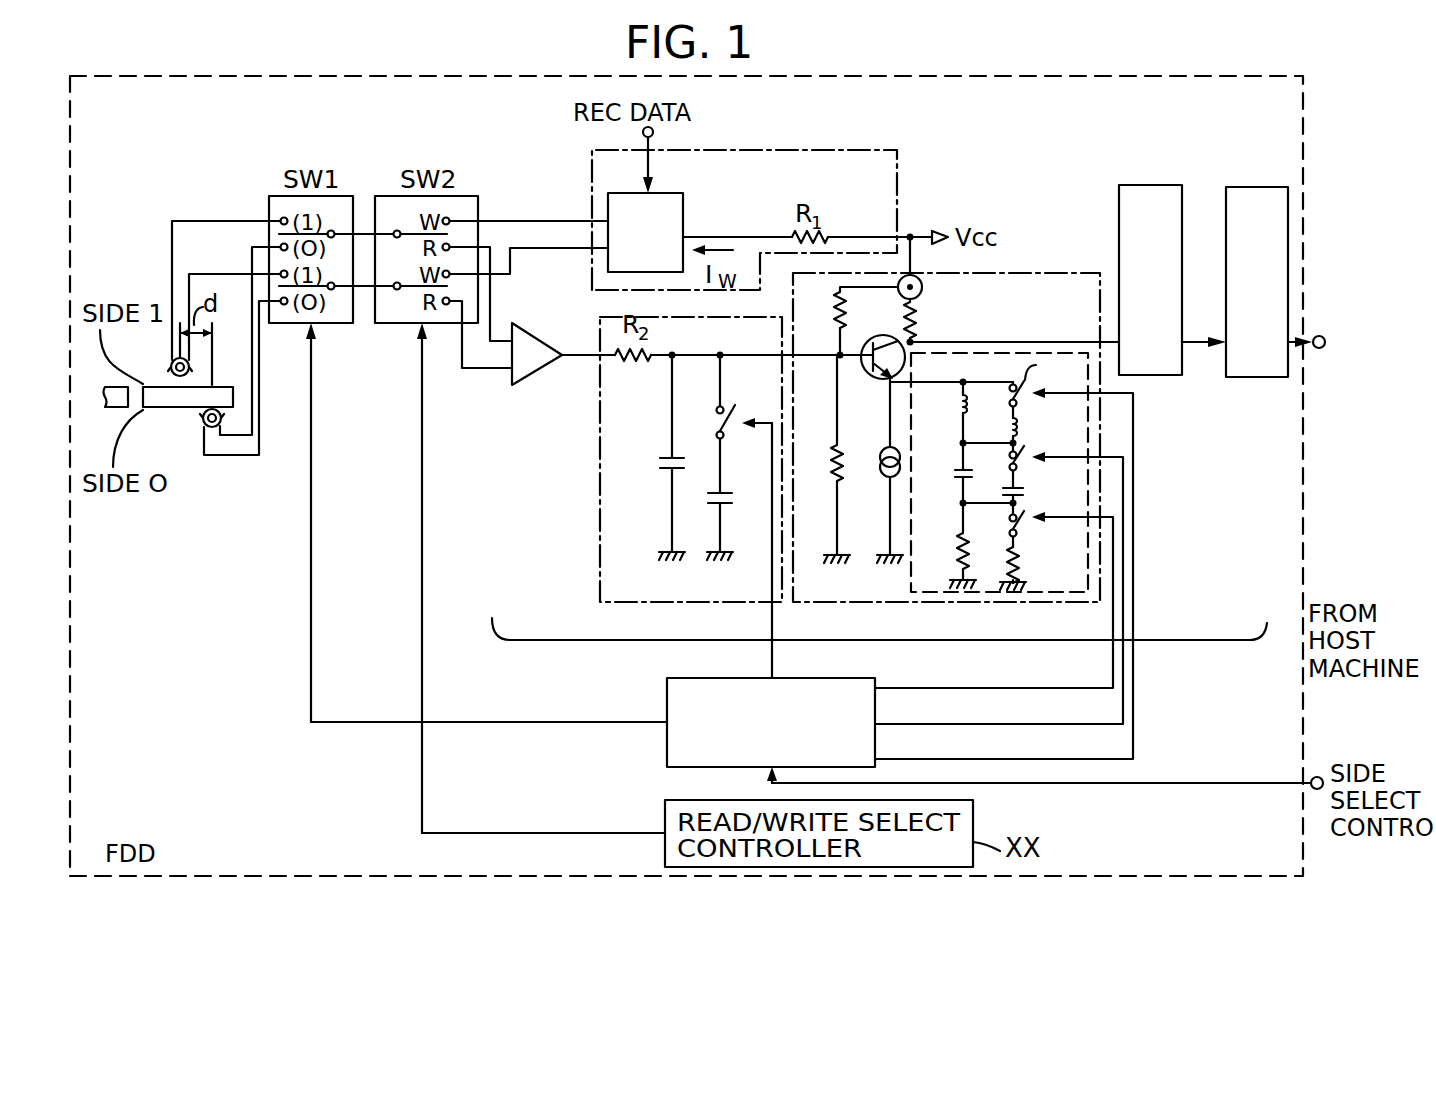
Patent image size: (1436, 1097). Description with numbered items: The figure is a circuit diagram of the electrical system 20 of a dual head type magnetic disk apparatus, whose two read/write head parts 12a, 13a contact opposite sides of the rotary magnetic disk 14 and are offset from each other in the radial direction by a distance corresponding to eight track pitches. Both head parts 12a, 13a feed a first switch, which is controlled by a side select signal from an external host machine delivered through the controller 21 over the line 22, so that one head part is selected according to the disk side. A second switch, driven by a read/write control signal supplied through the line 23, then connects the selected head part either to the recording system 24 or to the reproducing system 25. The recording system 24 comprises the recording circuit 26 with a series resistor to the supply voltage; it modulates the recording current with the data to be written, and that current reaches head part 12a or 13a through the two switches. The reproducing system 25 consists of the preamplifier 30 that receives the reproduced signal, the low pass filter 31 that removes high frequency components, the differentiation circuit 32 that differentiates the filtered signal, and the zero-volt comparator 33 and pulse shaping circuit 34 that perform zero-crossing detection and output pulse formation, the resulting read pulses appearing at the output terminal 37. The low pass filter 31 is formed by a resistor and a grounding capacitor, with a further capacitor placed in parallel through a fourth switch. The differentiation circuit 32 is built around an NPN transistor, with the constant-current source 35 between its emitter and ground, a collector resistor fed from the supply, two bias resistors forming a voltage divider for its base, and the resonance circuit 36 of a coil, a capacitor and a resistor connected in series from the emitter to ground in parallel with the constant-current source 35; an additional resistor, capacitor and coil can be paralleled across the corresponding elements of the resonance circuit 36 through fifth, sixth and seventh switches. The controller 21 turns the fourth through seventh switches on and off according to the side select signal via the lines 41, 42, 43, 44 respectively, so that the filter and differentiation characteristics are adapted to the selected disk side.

The read/write head part 12a is at (170, 372).
The read/write head part 13a is at (203, 423).
The magnetic disk 14 is at (223, 387).
The electrical system 20 is at (1039, 113).
The controller 21 is at (805, 678).
The line 22 is at (667, 696).
The line 23 is at (530, 833).
The recording system 24 is at (850, 148).
The reproducing system 25 is at (957, 640).
The recording circuit 26 is at (668, 192).
The preamplifier 30 is at (538, 331).
The low pass filter 31 is at (600, 560).
The differentiation circuit 32 is at (1047, 273).
The zero-volt comparator 33 is at (1165, 377).
The pulse shaping circuit 34 is at (1266, 187).
The constant-current source 35 is at (883, 452).
The resonance circuit 36 is at (910, 590).
The read data output terminal 37 is at (1319, 337).
The line 41 is at (772, 665).
The line 42 is at (1043, 688).
The line 43 is at (1043, 724).
The line 44 is at (1043, 759).